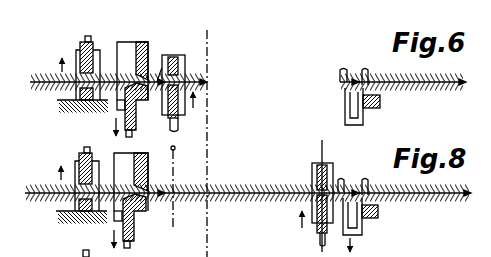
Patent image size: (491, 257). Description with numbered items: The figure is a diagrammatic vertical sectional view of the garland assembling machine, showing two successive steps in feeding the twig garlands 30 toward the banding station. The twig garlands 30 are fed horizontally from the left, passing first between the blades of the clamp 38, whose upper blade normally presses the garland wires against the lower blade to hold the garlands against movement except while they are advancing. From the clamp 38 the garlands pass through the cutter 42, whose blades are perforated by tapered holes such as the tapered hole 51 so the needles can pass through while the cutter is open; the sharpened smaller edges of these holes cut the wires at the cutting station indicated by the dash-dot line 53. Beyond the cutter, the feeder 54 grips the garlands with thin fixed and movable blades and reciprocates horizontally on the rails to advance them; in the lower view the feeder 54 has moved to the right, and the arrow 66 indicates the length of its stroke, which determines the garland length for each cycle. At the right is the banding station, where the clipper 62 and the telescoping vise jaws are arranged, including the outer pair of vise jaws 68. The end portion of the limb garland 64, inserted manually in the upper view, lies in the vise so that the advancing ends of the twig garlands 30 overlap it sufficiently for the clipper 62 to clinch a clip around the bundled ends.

In FIG. 6, the twig garlands 30 is at (48, 88).
In FIG. 8, the twig garlands 30 is at (32, 185).
In FIG. 6, the clamp 38 is at (98, 50).
In FIG. 8, the clamp 38 is at (94, 160).
In FIG. 6, the cutter 42 is at (136, 42).
In FIG. 6, the tapered hole 51 is at (157, 82).
In FIG. 6, the dash-dot line 53 is at (209, 51).
In FIG. 6, the feeder 54 is at (183, 61).
In FIG. 8, the feeder 54 is at (312, 176).
In FIG. 6, the clipper 62 is at (343, 116).
In FIG. 6, the limb garland 64 is at (428, 88).
In FIG. 8, the arrow 66 is at (321, 148).
In FIG. 6, the outer pair of vise jaws 68 is at (347, 66).